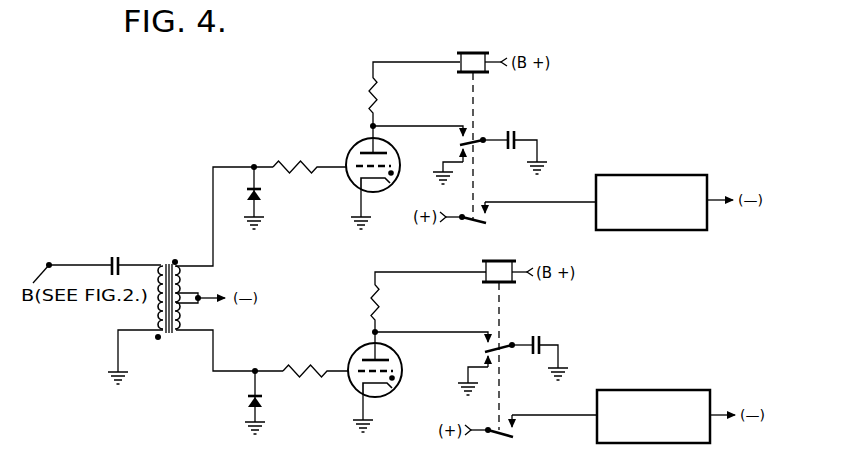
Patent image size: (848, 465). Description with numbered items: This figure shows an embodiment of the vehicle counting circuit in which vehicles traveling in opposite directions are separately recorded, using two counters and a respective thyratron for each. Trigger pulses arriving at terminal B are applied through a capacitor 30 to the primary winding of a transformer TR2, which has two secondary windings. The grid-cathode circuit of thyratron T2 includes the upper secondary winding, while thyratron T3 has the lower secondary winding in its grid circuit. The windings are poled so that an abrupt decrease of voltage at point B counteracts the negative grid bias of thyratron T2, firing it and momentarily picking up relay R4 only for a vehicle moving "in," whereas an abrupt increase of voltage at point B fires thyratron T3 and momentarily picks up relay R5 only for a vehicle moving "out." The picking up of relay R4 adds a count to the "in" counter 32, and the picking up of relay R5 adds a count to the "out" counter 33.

The capacitor 30 is at (115, 258).
The "in" counter 32 is at (667, 175).
The "out" counter 33 is at (685, 390).
The transformer TR2 is at (173, 291).
The thyratron T2 is at (353, 152).
The thyratron T3 is at (401, 363).
The relay R4 is at (472, 52).
The relay R5 is at (498, 260).